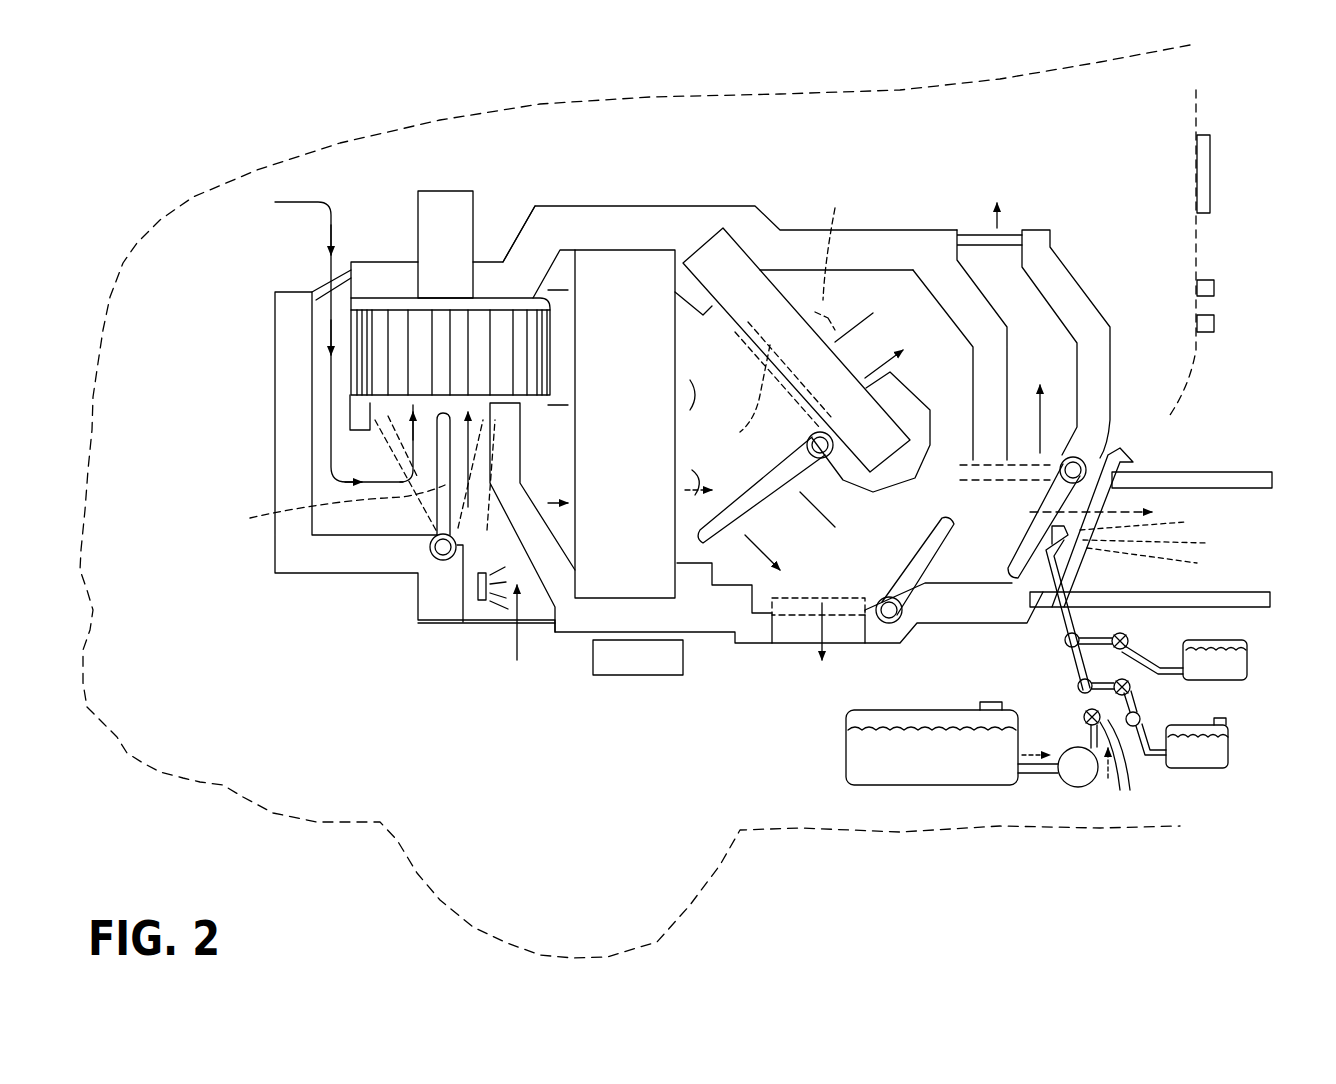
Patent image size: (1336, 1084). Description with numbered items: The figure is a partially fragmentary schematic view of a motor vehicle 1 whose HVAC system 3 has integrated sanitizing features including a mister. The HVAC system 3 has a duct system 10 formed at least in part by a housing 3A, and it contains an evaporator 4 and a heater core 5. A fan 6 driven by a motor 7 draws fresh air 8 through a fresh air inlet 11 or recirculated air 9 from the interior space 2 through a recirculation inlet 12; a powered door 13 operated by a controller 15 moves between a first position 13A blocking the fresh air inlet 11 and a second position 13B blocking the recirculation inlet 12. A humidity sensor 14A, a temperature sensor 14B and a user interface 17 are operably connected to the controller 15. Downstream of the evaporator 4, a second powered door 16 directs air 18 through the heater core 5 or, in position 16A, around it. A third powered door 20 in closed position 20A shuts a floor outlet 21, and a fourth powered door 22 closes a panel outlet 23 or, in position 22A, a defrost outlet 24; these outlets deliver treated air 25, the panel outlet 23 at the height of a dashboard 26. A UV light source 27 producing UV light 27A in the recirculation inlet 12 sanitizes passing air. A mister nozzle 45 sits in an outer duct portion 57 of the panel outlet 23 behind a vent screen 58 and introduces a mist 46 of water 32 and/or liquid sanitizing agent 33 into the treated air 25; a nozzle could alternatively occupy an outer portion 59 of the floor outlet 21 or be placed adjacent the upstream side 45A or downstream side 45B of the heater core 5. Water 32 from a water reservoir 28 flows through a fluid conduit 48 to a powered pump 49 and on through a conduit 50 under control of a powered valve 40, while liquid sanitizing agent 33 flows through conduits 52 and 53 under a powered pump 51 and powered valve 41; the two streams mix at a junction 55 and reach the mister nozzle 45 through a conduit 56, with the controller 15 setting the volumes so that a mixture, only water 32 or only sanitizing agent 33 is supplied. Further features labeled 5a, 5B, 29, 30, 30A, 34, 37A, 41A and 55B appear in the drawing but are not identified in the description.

The motor vehicle 1 is at (188, 195).
The interior space 2 is at (1296, 104).
The HVAC system 3 is at (720, 195).
The housing 3A is at (645, 206).
The evaporator 4 is at (628, 262).
The heater core 5 is at (867, 388).
The evaporator surface 5a is at (727, 322).
The evaporator downstream side 5B is at (835, 352).
The fan 6 is at (408, 330).
The motor 7 is at (443, 212).
The fresh air 8 is at (326, 215).
The recirculated air 9 is at (518, 635).
The duct system 10 is at (107, 527).
The fresh air inlet 11 is at (320, 280).
The recirculation inlet 12 is at (492, 610).
The powered door 13 is at (443, 497).
The first position 13A is at (325, 511).
The second position 13B is at (497, 548).
The humidity sensor 14A is at (1215, 289).
The temperature sensor 14B is at (1215, 324).
The controller 15 is at (652, 670).
The second powered door 16 is at (737, 540).
The bypass position 16A is at (752, 418).
The user interface 17 is at (1212, 152).
The air 18 is at (692, 396).
The third powered door 20 is at (908, 570).
The closed position 20A is at (788, 632).
The floor outlet 21 is at (843, 622).
The fourth powered door 22 is at (1040, 535).
The second position 22A is at (1000, 483).
The panel outlet 23 is at (1120, 497).
The defrost outlet 24 is at (1000, 255).
The treated air 25 is at (1004, 198).
The dashboard 26 is at (1192, 383).
The UV light source 27 is at (467, 588).
The UV light 27A is at (487, 603).
The water reservoir 28 is at (843, 732).
The tank cap 29 is at (990, 703).
The additive tank 30 is at (1236, 746).
The additive supply 30A is at (1252, 641).
The water 32 is at (880, 765).
The liquid sanitizing agent 33 is at (1210, 758).
The cleaning agent tank 34 is at (1230, 673).
The cleaning agent pipe 37A is at (1150, 665).
The powered valve 40 is at (1122, 760).
The powered valve 41 is at (1130, 688).
The cleaning agent valve 41A is at (1128, 635).
The mister nozzle 45 is at (1052, 530).
The upstream side 45A is at (767, 378).
The downstream side 45B is at (829, 257).
The mist 46 is at (1210, 523).
The fluid conduit 48 is at (1040, 778).
The powered pump 49 is at (1085, 790).
The conduit 50 is at (1098, 778).
The powered pump 51 is at (1145, 722).
The conduit 52 is at (1158, 760).
The conduit 53 is at (1080, 690).
The junction 55 is at (1084, 717).
The first junction 55B is at (1065, 645).
The conduit 56 is at (1060, 626).
The outer duct portion 57 is at (1120, 450).
The vent screen 58 is at (1140, 452).
The outer portion 59 is at (745, 650).